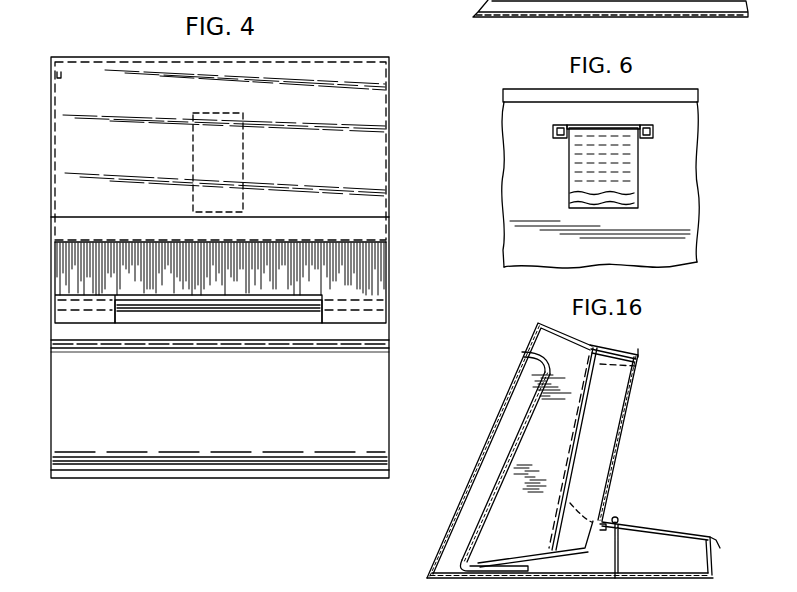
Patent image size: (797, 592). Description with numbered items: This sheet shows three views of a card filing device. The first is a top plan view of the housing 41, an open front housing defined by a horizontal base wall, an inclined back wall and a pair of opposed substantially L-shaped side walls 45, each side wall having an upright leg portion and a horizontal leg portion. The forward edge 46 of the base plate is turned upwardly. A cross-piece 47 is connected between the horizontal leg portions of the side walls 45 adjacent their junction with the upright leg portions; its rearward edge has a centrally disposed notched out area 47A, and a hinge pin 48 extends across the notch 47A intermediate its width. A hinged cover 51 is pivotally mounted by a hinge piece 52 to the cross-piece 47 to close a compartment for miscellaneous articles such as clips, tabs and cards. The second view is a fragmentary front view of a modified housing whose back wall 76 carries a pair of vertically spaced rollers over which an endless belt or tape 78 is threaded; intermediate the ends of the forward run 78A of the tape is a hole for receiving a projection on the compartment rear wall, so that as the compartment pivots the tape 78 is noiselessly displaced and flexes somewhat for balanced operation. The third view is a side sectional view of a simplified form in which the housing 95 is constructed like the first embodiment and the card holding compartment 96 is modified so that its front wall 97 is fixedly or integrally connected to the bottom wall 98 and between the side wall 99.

In FIG. 4, the housing 41 is at (398, 233).
In FIG. 4, the side walls 45 is at (51, 178).
In FIG. 4, the forward edge 46 is at (345, 471).
In FIG. 4, the cross-piece 47 is at (373, 329).
In FIG. 4, the notched out area 47A is at (290, 319).
In FIG. 4, the hinge pin 48 is at (190, 305).
In FIG. 4, the hinged cover 51 is at (366, 431).
In FIG. 4, the hinge piece 52 is at (393, 346).
In FIG. 6, the back wall 76 is at (683, 199).
In FIG. 6, the endless belt or tape 78 is at (568, 201).
In FIG. 6, the forward run 78A is at (614, 169).
In FIG. 16, the housing 95 is at (487, 420).
In FIG. 16, the card holding compartment 96 is at (637, 387).
In FIG. 16, the front wall 97 is at (583, 341).
In FIG. 16, the bottom wall 98 is at (612, 465).
In FIG. 16, the side wall 99 is at (600, 440).